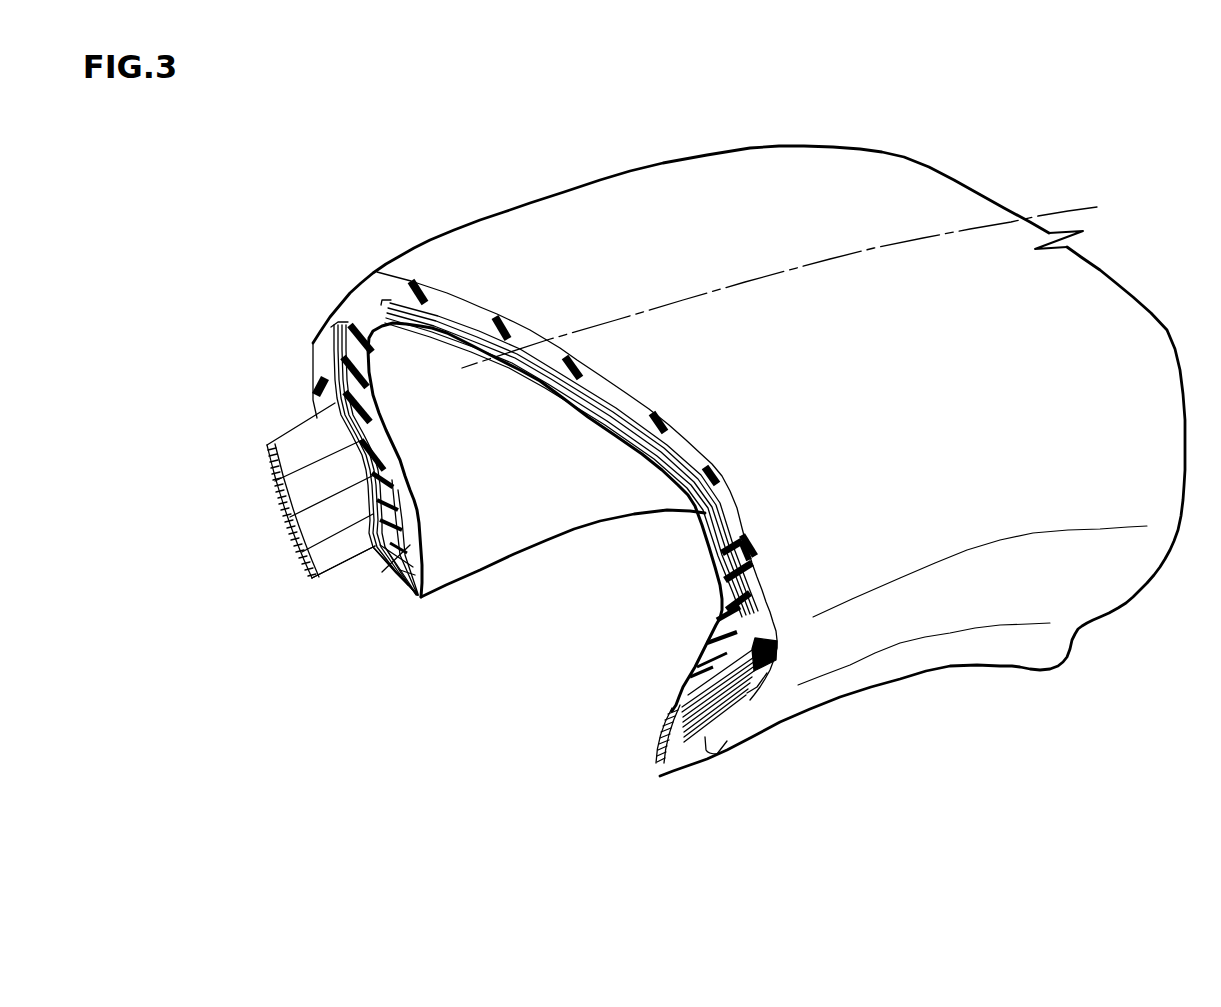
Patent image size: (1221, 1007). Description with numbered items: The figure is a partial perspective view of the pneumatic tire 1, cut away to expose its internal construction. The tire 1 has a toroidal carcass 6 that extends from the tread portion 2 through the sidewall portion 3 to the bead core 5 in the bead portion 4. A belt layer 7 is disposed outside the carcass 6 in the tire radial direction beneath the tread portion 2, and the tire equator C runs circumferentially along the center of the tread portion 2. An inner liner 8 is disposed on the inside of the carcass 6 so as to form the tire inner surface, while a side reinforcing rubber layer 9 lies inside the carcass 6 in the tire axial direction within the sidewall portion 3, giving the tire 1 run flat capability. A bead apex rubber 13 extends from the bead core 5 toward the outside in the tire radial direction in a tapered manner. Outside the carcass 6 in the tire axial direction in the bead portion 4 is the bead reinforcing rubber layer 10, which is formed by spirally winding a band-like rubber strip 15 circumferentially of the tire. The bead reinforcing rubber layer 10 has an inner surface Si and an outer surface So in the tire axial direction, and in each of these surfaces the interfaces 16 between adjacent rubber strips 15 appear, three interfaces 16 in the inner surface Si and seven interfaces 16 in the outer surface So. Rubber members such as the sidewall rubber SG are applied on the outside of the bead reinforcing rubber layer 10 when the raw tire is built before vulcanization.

The pneumatic tire 1 is at (995, 163).
The tread portion 2 is at (716, 228).
The sidewall portion 3 is at (303, 363).
The bead portion 4 is at (403, 593).
The bead core 5 is at (388, 588).
The carcass 6 is at (357, 307).
The belt layer 7 is at (443, 310).
The inner liner 8 is at (541, 516).
The side reinforcing rubber layer 9 is at (353, 350).
The bead reinforcing rubber layer 10 is at (278, 428).
The bead apex rubber 13 is at (407, 570).
The rubber strip 15 is at (280, 454).
The interfaces 16 is at (333, 555).
The inner surface Si is at (304, 437).
The outer surface So is at (707, 735).
The sidewall rubber SG is at (765, 668).
The tire equator C is at (793, 278).